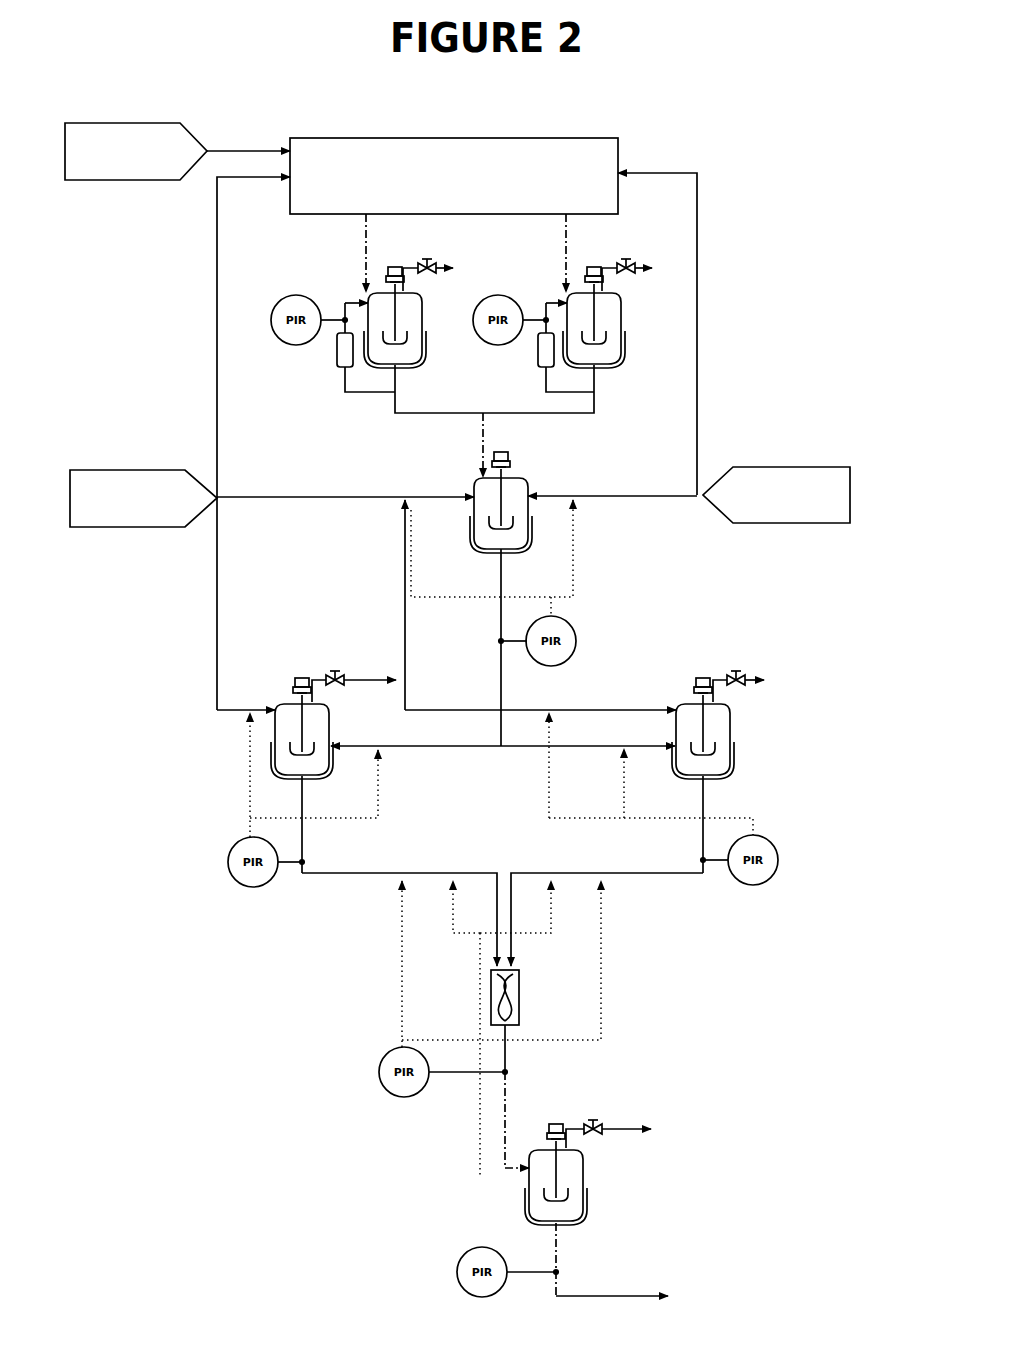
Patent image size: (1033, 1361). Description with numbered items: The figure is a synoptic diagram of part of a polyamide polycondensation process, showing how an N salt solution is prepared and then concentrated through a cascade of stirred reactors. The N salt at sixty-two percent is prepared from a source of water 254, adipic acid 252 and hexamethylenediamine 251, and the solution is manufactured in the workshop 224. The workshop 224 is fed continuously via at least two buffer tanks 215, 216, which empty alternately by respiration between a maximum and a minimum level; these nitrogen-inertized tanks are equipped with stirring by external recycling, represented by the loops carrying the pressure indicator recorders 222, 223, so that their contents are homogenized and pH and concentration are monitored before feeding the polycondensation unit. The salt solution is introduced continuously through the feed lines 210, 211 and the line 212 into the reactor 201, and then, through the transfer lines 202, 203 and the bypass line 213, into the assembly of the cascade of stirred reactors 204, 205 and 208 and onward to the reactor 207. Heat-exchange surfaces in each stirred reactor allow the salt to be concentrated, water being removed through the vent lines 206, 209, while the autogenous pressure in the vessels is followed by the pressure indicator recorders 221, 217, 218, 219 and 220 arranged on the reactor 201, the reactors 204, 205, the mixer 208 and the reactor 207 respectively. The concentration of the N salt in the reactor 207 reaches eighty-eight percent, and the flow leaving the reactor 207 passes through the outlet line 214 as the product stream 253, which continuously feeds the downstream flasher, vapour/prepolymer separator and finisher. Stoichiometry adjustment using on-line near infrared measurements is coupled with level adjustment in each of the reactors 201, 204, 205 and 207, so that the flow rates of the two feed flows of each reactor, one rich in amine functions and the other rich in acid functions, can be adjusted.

The reactor 201 is at (515, 475).
The transfer line to reactor 204 202 is at (451, 748).
The transfer line to reactor 205 203 is at (607, 750).
The stirred reactor 204 is at (283, 707).
The stirred reactor 205 is at (732, 732).
The water vent line with valve 206 is at (355, 677).
The reactor 207 is at (583, 1178).
The stirred reactor 208 is at (520, 993).
The water vent line with valve 209 is at (613, 1123).
The feed line from stream 251 210 is at (420, 495).
The feed line from stream 252 211 is at (592, 495).
The recycle line 212 is at (218, 665).
The bypass line 213 is at (405, 622).
The product outlet line 214 is at (593, 1296).
The buffer tank 215 is at (423, 355).
The buffer tank 216 is at (622, 355).
The pressure indicator recorder 217 is at (227, 863).
The pressure indicator recorder 218 is at (777, 847).
The pressure indicator recorder 219 is at (380, 1080).
The pressure indicator recorder 220 is at (456, 1273).
The pressure indicator recorder 221 is at (573, 630).
The pressure indicator recorder 222 is at (273, 312).
The pressure indicator recorder 223 is at (522, 310).
The workshop 224 is at (618, 162).
The hexamethylenediamine 251 is at (90, 462).
The adipic acid 252 is at (757, 460).
The product stream 253 is at (698, 1295).
The source of water 254 is at (85, 123).